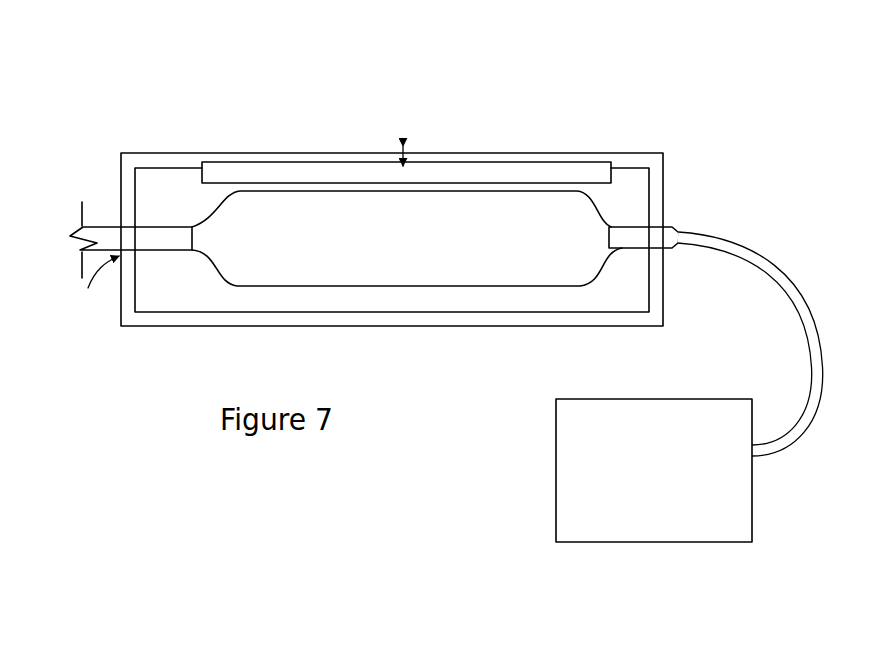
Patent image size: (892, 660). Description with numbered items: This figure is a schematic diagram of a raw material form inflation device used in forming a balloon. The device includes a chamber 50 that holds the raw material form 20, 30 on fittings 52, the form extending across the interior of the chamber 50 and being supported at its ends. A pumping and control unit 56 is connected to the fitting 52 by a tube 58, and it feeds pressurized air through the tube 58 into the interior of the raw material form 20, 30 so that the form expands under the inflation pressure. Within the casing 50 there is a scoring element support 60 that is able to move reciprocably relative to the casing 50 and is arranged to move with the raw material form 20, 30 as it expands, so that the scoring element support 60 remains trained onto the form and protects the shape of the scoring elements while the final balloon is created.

The chamber 50 is at (628, 131).
The scoring element support 60 is at (455, 168).
The raw material form 20 is at (464, 217).
The raw material form 30 is at (614, 204).
The fitting 52 is at (665, 252).
The tube 58 is at (757, 257).
The pumping and control unit 56 is at (556, 442).